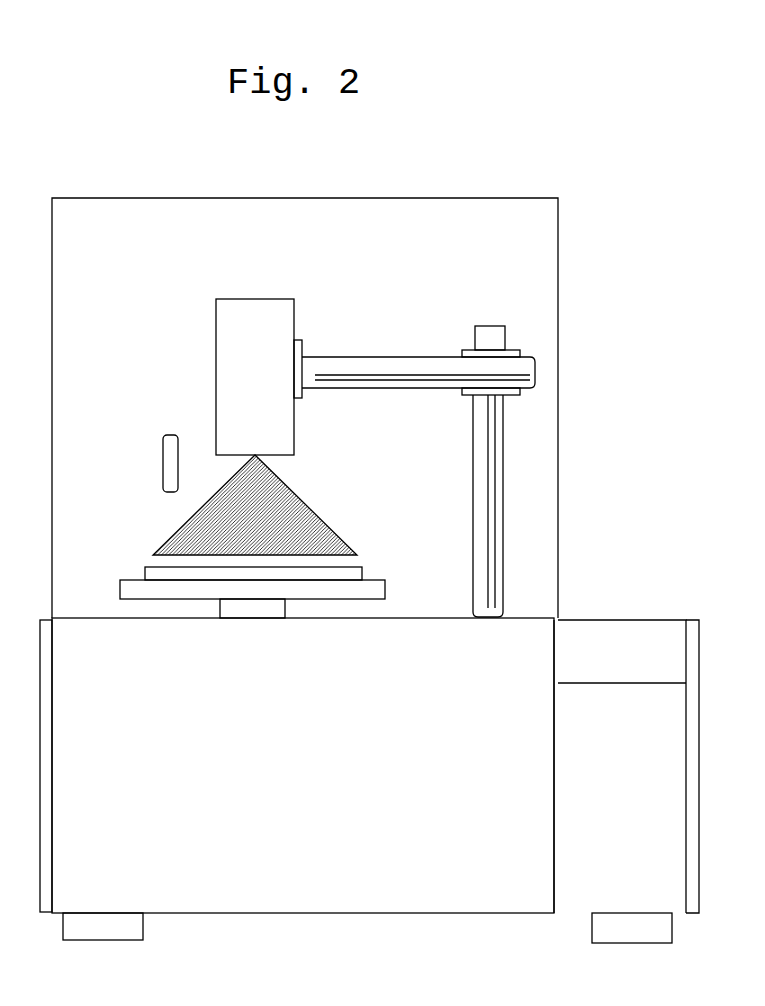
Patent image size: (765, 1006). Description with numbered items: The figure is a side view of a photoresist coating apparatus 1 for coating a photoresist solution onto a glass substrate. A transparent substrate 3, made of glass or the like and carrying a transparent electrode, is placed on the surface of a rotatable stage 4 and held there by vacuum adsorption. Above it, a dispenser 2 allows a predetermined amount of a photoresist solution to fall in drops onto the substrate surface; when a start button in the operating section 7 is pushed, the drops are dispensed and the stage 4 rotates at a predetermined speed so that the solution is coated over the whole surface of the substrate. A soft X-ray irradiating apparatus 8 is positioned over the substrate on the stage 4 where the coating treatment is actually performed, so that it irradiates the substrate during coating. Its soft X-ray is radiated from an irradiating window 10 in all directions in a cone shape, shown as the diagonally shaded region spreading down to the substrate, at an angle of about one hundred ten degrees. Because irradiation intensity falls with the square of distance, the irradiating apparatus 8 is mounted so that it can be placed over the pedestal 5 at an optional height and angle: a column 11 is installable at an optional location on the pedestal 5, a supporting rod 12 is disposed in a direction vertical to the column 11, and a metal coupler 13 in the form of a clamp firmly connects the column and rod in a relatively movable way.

The photoresist coating apparatus 1 is at (508, 198).
The dispenser 2 is at (170, 443).
The transparent substrate 3 is at (362, 575).
The stage 4 is at (352, 589).
The pedestal 5 is at (100, 618).
The operating section 7 is at (632, 671).
The soft X-ray irradiating apparatus 8 is at (237, 327).
The irradiating window 10 is at (255, 455).
The column 11 is at (503, 508).
The supporting rod 12 is at (343, 357).
The metal coupler 13 is at (520, 352).